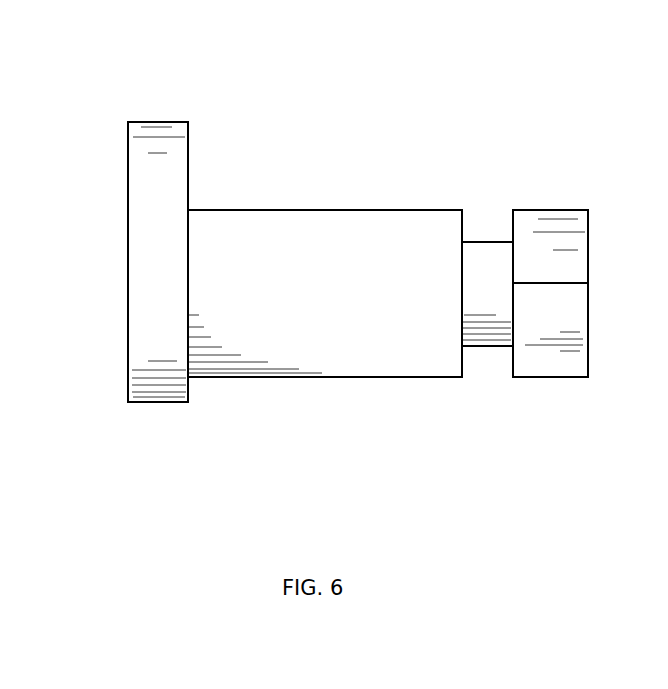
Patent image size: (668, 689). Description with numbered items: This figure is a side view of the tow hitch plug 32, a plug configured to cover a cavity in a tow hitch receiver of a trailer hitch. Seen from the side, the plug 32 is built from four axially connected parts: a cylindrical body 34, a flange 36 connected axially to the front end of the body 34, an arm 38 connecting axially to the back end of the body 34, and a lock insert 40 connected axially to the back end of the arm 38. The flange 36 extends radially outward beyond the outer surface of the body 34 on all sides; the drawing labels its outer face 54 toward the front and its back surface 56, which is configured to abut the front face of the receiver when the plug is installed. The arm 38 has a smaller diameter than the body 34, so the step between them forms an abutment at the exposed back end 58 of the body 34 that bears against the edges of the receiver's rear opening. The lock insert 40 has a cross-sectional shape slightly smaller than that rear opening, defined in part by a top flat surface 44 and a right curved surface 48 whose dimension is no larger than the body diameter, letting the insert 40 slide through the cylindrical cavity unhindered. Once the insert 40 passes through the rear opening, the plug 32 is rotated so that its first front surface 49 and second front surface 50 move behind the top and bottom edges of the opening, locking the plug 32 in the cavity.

The tow hitch plug 32 is at (352, 136).
The cylindrical body 34 is at (269, 227).
The flange 36 is at (160, 283).
The arm 38 is at (490, 253).
The lock insert 40 is at (583, 304).
The top flat surface 44 is at (573, 272).
The right curved surface 48 is at (542, 367).
The first front surface 49 is at (513, 225).
The second front surface 50 is at (513, 360).
The head outer face 54 is at (128, 151).
The back surface 56 is at (188, 144).
The back end 58 is at (462, 228).